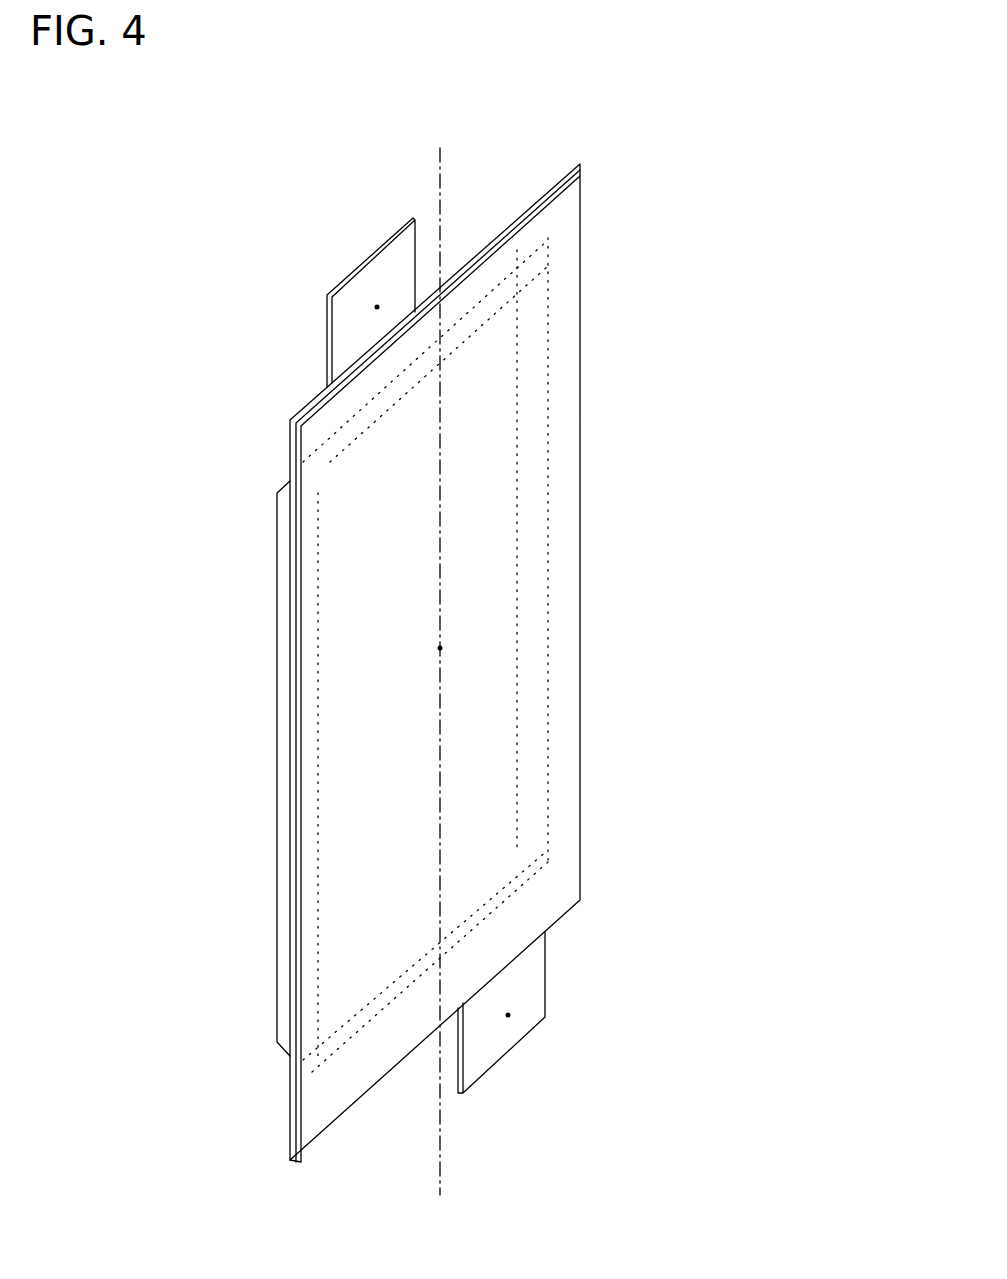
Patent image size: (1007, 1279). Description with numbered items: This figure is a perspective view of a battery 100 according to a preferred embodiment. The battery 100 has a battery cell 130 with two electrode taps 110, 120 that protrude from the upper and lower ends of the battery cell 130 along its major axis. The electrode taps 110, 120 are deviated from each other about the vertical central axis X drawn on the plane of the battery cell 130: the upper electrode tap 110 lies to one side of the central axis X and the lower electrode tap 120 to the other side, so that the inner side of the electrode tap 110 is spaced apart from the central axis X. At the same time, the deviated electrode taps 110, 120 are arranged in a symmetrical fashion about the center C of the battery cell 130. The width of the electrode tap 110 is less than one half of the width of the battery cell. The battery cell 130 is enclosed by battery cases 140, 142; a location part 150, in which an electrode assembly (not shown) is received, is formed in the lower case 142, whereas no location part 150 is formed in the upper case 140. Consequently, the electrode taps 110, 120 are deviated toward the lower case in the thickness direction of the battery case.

The battery 100 is at (90, 132).
The electrode tap 110 is at (326, 312).
The electrode tap 120 is at (548, 1002).
The battery cell 130 is at (645, 324).
The upper case 140 is at (431, 663).
The lower case 142 is at (288, 446).
The location part 150 is at (275, 683).
The vertical central axis X is at (441, 182).
The center C is at (440, 648).